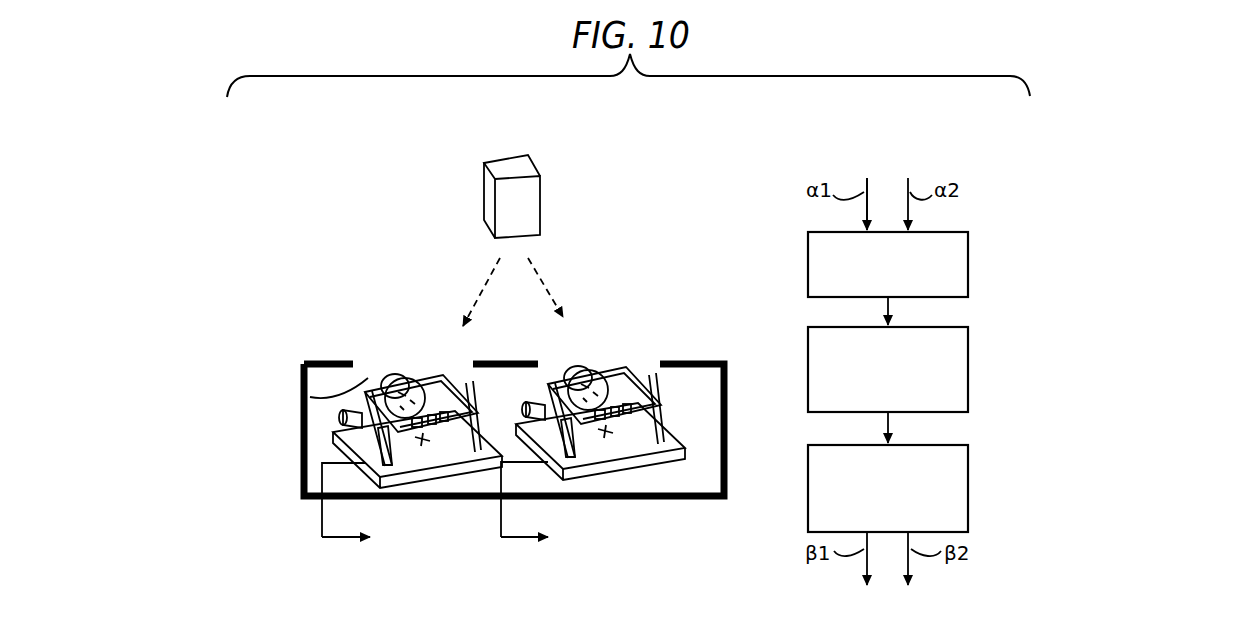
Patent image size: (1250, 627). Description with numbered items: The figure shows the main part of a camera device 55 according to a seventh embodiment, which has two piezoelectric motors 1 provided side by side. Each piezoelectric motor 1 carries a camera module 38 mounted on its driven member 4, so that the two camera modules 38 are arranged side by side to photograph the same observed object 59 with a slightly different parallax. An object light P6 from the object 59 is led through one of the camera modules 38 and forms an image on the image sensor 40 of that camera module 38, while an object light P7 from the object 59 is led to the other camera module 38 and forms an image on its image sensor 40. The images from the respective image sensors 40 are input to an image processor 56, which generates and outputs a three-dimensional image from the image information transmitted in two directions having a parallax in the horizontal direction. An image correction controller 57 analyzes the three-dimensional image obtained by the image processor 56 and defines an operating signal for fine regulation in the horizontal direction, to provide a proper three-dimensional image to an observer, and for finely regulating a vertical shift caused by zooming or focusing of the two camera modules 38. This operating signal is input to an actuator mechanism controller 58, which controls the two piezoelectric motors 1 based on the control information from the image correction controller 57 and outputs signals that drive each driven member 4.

The piezoelectric motor 1 is at (466, 468).
The driven member 4 is at (415, 390).
The camera module 38 is at (437, 385).
The image sensor 40 is at (308, 397).
The camera device 55 is at (684, 226).
The image processor 56 is at (970, 262).
The image correction controller 57 is at (970, 374).
The actuator mechanism controller 58 is at (970, 487).
The object 59 is at (508, 164).
The object light P6 is at (488, 278).
The object light P7 is at (546, 282).